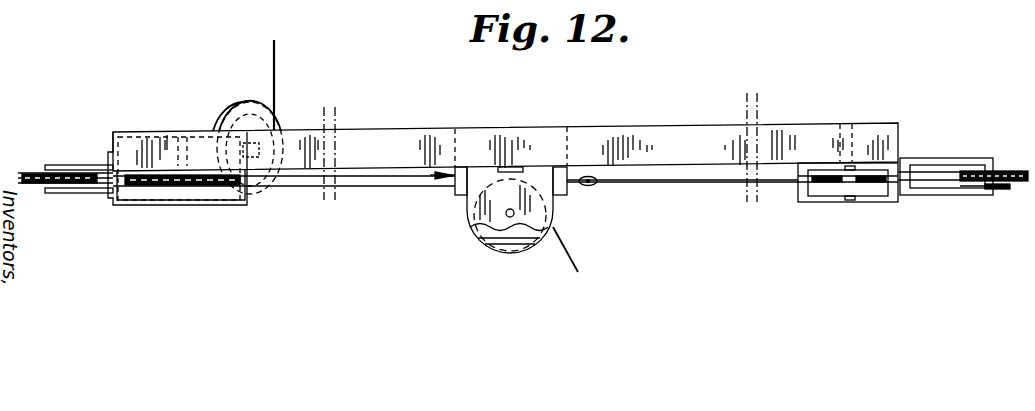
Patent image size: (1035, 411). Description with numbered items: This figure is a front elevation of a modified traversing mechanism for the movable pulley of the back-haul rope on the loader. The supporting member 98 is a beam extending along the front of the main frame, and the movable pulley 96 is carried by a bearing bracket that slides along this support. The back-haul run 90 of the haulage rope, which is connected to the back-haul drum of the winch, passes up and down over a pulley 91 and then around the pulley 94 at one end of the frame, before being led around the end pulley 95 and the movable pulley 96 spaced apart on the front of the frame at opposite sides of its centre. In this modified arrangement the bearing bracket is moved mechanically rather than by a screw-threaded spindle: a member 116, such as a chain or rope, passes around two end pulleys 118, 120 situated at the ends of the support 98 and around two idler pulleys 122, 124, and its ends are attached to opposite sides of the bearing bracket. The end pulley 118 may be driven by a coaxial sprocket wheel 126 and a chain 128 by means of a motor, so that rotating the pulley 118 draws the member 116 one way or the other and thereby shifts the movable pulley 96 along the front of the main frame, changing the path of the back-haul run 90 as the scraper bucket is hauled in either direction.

The back-haul run 90 is at (592, 254).
The pulley 91 is at (246, 65).
The pulley 94 is at (228, 105).
The pulley 95 is at (155, 197).
The movable pulley 96 is at (487, 247).
The supporting member 98 is at (377, 130).
The member 116 is at (406, 181).
The end pulley 118 is at (1025, 170).
The end pulley 120 is at (32, 172).
The idler pulley 122 is at (920, 165).
The idler pulley 124 is at (830, 195).
The sprocket wheel 126 is at (1005, 189).
The chain 128 is at (1010, 190).